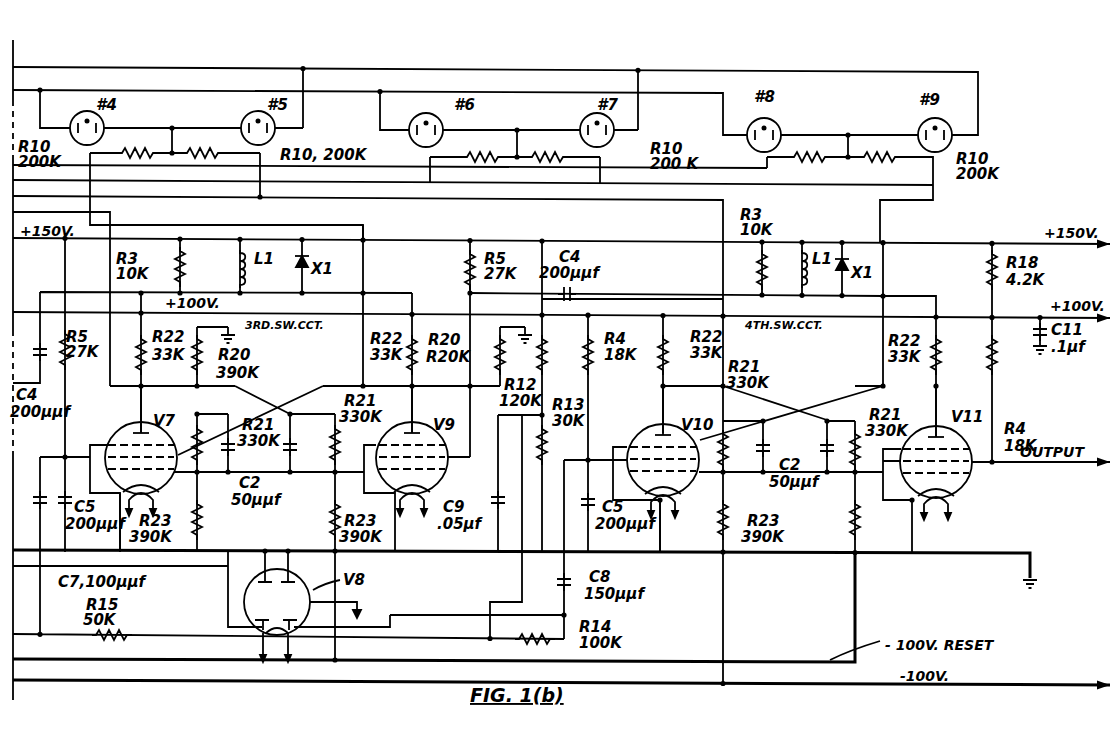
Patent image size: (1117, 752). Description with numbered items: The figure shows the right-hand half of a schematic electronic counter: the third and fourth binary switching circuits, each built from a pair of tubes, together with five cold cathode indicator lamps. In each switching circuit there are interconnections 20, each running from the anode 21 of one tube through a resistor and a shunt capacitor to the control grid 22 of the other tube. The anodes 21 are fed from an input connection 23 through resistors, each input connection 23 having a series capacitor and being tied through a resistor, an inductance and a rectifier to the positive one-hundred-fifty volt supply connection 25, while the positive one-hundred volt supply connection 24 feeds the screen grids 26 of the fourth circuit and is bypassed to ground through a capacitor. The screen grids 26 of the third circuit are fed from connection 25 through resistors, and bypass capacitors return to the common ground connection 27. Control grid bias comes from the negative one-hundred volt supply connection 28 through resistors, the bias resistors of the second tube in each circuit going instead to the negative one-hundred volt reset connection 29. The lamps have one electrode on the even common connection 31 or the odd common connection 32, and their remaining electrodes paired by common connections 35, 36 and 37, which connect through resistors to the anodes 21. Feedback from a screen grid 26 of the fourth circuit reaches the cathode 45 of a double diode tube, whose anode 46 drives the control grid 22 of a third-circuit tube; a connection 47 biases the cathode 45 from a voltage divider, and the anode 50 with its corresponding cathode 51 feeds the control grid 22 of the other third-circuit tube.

The interconnection 20 is at (782, 394).
The anode 21 is at (947, 425).
The control grid 22 is at (964, 476).
The input connection 23 is at (921, 295).
The +100 volt supply connection 24 is at (965, 315).
The +150 volt supply connection 25 is at (572, 237).
The screen grid 26 is at (962, 460).
The common ground connection 27 is at (950, 574).
The -100 volt supply connection 28 is at (88, 684).
The -100 volt reset connection 29 is at (750, 647).
The common connection 31 is at (344, 87).
The common connection 32 is at (58, 68).
The common connection 35 is at (166, 118).
The common connection 36 is at (498, 118).
The common connection 37 is at (840, 112).
The cathode 45 is at (289, 615).
The anode 46 is at (331, 570).
The connection 47 is at (519, 593).
The anode 50 is at (265, 555).
The cathode 51 is at (245, 624).